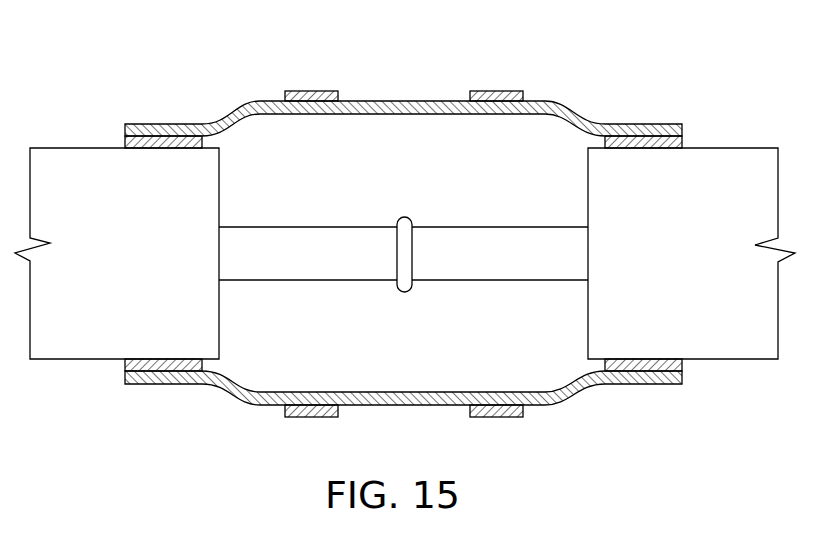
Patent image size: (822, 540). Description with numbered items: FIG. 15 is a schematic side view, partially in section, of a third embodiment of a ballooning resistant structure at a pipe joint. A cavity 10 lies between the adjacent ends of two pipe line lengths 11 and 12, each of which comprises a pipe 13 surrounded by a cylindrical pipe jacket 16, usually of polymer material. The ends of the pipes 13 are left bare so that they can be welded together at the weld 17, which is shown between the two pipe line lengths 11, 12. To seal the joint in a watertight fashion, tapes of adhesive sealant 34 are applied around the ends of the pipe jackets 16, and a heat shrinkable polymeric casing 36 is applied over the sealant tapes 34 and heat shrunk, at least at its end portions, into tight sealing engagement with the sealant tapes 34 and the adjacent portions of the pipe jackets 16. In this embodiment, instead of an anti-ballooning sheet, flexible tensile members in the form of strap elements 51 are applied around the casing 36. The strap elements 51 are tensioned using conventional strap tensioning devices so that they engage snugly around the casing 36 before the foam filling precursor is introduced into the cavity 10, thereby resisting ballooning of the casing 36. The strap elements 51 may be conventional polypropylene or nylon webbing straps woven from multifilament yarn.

The cavity 10 is at (541, 148).
The pipe line length 11 is at (78, 137).
The pipe line length 12 is at (712, 138).
The pipe 13 is at (306, 250).
The pipe jacket 16 is at (708, 335).
The weld 17 is at (404, 215).
The adhesive sealant tape 34 is at (147, 124).
The heat shrinkable polymeric casing 36 is at (393, 102).
The strap element 51 is at (313, 91).